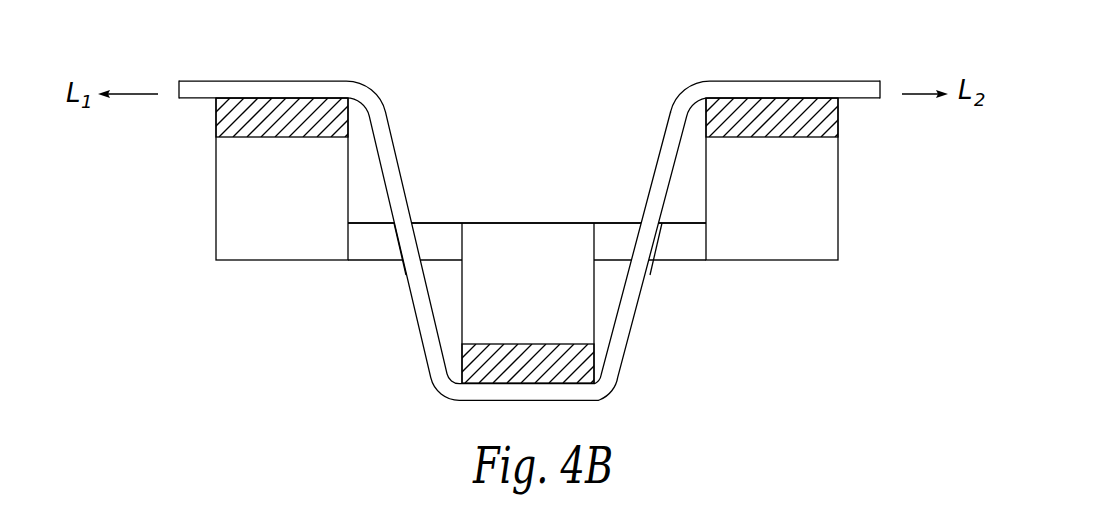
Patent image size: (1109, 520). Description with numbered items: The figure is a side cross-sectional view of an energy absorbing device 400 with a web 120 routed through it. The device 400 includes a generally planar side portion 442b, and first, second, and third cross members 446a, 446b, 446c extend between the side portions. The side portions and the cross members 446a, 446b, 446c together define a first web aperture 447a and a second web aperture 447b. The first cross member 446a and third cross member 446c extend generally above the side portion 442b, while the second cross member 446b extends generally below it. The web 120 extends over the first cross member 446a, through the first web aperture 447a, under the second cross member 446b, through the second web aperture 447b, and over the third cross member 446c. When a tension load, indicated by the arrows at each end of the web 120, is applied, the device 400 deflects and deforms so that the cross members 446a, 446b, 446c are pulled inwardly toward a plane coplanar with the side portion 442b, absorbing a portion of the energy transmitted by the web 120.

The web 120 is at (378, 97).
The energy absorbing device 400 is at (225, 222).
The second side portion 442b is at (447, 228).
The first cross member 446a is at (230, 122).
The second cross member 446b is at (477, 365).
The third cross member 446c is at (823, 125).
The first web aperture 447a is at (395, 267).
The second web aperture 447b is at (672, 263).